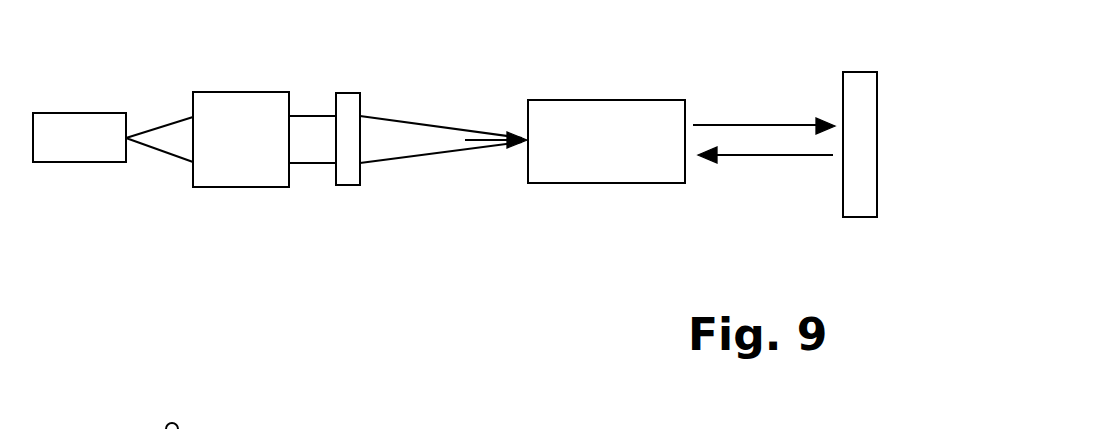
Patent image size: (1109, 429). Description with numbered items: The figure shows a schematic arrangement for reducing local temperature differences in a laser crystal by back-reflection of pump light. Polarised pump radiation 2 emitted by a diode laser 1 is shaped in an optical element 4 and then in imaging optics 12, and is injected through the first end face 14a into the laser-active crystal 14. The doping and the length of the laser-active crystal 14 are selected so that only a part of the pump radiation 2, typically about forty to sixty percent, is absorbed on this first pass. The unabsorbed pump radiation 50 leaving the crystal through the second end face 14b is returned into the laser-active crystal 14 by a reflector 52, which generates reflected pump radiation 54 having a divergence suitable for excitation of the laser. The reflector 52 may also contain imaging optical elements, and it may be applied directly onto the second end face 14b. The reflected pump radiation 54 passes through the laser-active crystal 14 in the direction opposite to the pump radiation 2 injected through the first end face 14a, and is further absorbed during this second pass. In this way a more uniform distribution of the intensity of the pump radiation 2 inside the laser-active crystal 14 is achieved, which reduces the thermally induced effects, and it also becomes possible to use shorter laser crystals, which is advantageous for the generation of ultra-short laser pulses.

The diode laser 1 is at (86, 154).
The pump radiation 2 is at (140, 96).
The optical element 4 is at (250, 185).
The imaging optics 12 is at (347, 93).
The laser-active crystal 14 is at (625, 183).
The first end face 14a is at (527, 100).
The second end face 14b is at (713, 53).
The unabsorbed pump radiation 50 is at (800, 125).
The reflector 52 is at (877, 93).
The reflected pump radiation 54 is at (752, 155).